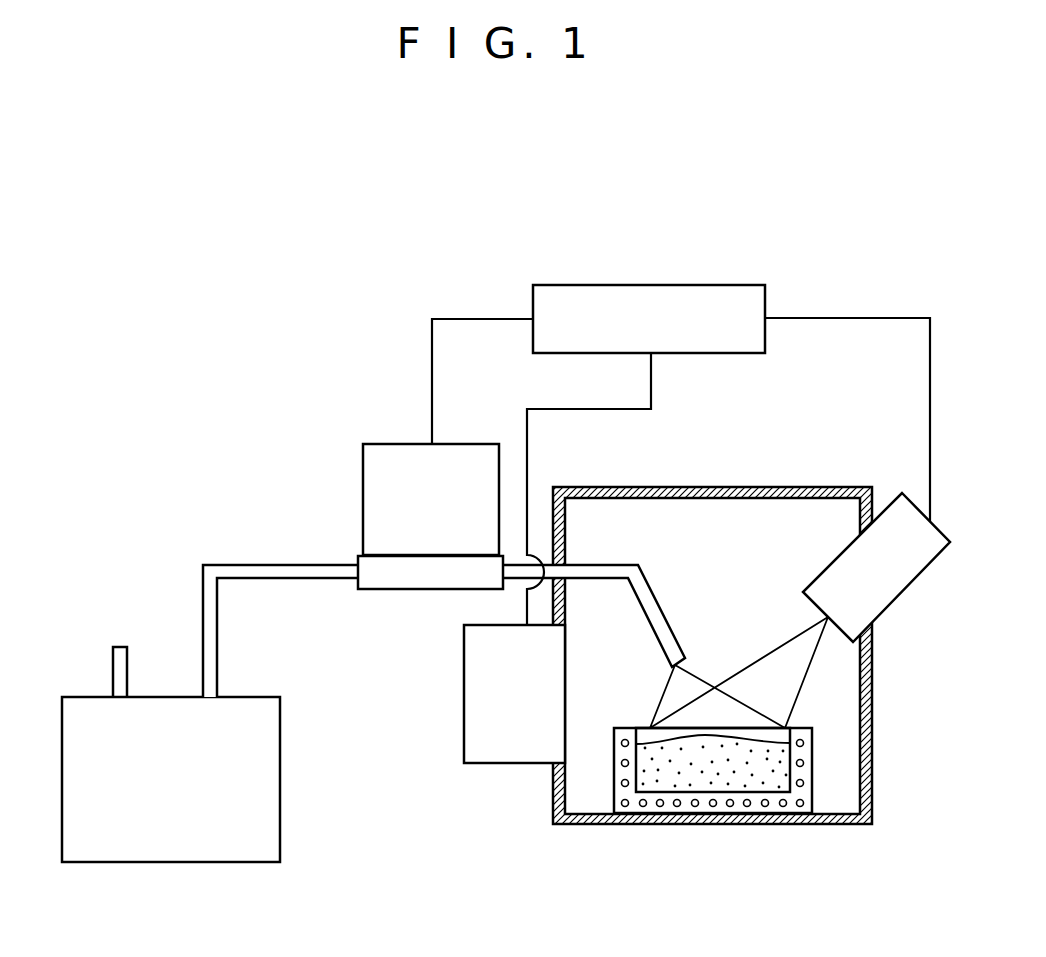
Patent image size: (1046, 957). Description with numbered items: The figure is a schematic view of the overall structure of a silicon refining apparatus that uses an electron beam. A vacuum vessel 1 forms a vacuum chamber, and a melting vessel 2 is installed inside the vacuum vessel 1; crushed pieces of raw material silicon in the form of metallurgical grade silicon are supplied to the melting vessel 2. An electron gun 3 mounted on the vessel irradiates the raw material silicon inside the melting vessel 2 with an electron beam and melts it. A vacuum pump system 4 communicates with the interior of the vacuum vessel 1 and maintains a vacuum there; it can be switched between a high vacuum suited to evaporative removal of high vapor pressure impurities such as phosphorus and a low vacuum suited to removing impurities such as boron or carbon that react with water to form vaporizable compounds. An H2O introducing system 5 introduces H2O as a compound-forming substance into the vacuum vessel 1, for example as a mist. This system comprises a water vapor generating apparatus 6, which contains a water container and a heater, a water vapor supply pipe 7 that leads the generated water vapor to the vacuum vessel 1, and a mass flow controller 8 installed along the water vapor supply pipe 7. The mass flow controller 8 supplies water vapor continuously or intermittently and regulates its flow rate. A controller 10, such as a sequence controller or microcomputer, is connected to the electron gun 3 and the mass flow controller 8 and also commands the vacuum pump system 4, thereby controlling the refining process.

The vacuum vessel 1 is at (842, 774).
The melting vessel 2 is at (670, 780).
The electron gun 3 is at (900, 590).
The vacuum pump system 4 is at (493, 753).
The H2O introducing system 5 is at (142, 456).
The water vapor generating apparatus 6 is at (168, 848).
The water vapor supply pipe 7 is at (270, 565).
The mass flow controller 8 is at (384, 578).
The controller 10 is at (640, 285).